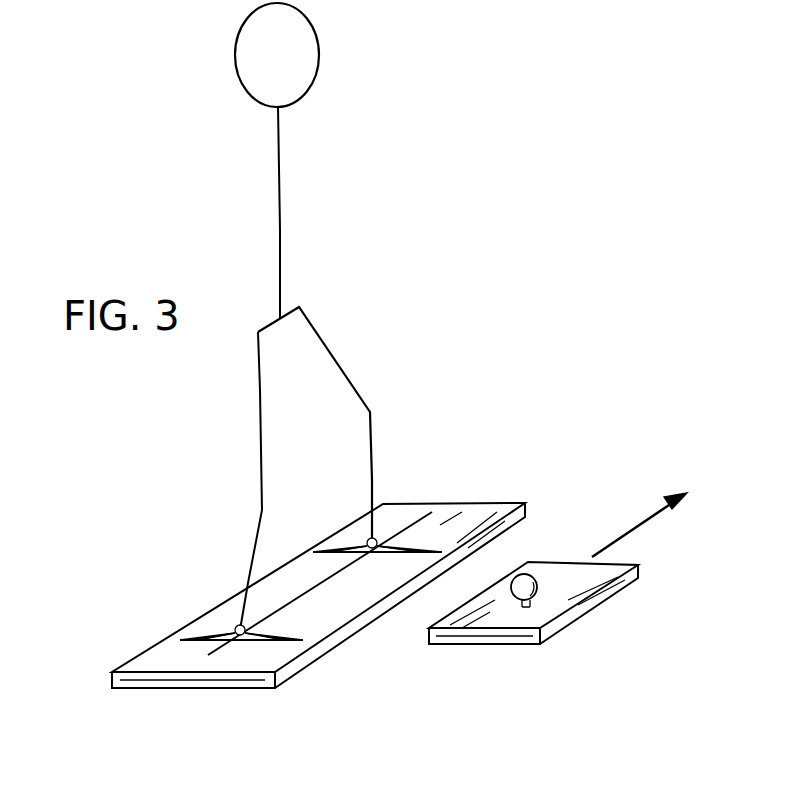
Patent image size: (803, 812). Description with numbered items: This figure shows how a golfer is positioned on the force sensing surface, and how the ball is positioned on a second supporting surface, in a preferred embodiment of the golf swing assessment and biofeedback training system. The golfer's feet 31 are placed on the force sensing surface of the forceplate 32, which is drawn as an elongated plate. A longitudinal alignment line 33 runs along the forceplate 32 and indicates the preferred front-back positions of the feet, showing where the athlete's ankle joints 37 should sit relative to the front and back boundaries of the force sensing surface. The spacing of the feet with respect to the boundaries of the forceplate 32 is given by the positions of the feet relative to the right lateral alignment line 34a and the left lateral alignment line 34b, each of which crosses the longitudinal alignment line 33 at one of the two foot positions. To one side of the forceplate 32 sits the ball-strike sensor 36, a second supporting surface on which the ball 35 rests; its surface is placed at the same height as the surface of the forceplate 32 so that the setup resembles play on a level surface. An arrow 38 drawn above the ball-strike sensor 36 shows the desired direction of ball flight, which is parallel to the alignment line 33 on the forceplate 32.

The golfer's feet 31 is at (281, 237).
The forceplate 32 is at (148, 660).
The longitudinal alignment line 33 is at (413, 521).
The right lateral alignment line 34a is at (400, 553).
The left lateral alignment line 34b is at (300, 640).
The ball 35 is at (520, 587).
The ball-strike sensor 36 is at (543, 612).
The ankle joints 37 is at (368, 539).
The arrow 38 is at (647, 518).